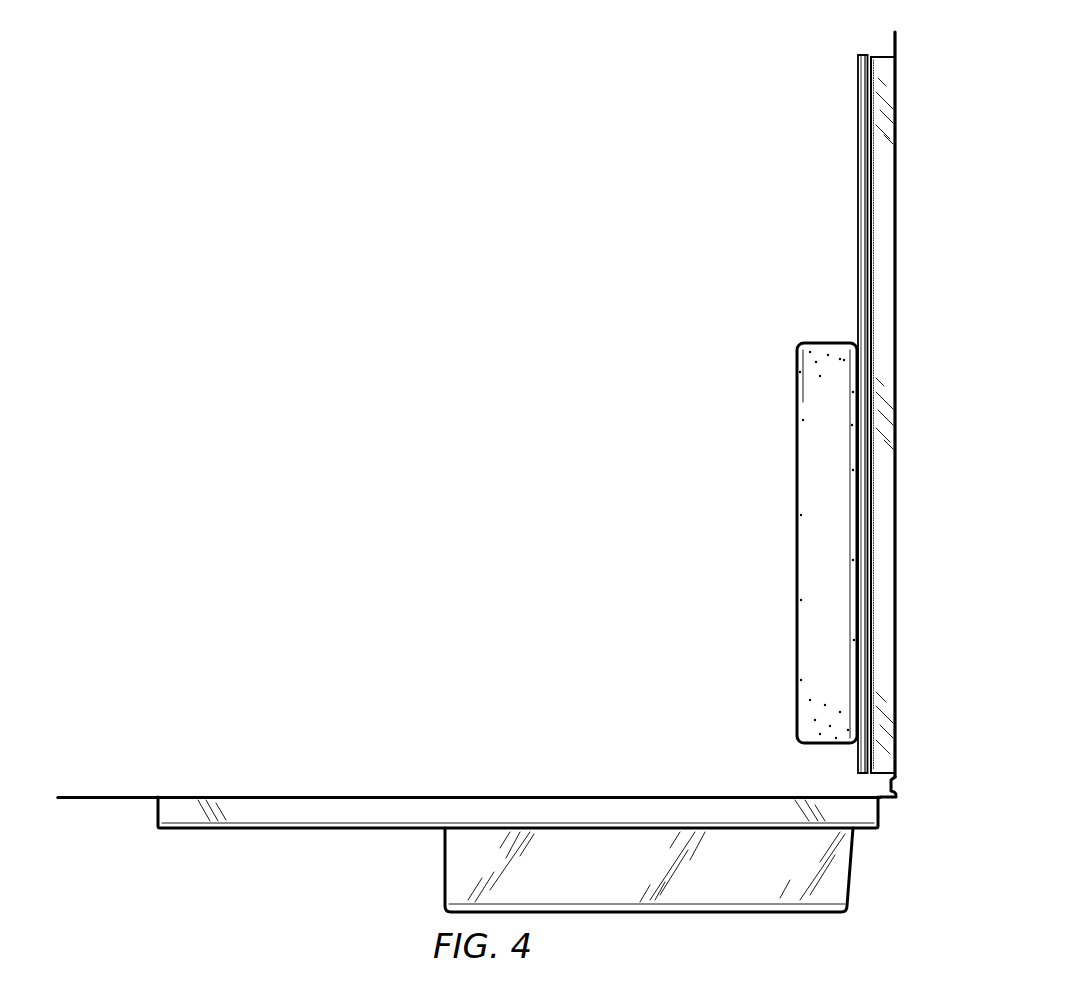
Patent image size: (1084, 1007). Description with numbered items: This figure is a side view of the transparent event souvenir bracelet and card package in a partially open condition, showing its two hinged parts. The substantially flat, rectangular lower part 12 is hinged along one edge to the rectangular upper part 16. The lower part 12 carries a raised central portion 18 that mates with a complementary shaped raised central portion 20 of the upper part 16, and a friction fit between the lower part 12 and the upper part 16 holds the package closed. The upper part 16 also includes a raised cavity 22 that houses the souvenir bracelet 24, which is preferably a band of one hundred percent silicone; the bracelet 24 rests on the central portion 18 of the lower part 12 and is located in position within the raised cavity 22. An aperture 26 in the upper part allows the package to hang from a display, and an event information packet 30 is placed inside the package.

The lower part 12 is at (898, 222).
The upper part 16 is at (68, 797).
The raised central portion 18 is at (885, 55).
The raised central portion 20 is at (262, 830).
The raised cavity 22 is at (455, 860).
The bracelet 24 is at (796, 418).
The aperture 26 is at (105, 800).
The event information packet 30 is at (858, 103).